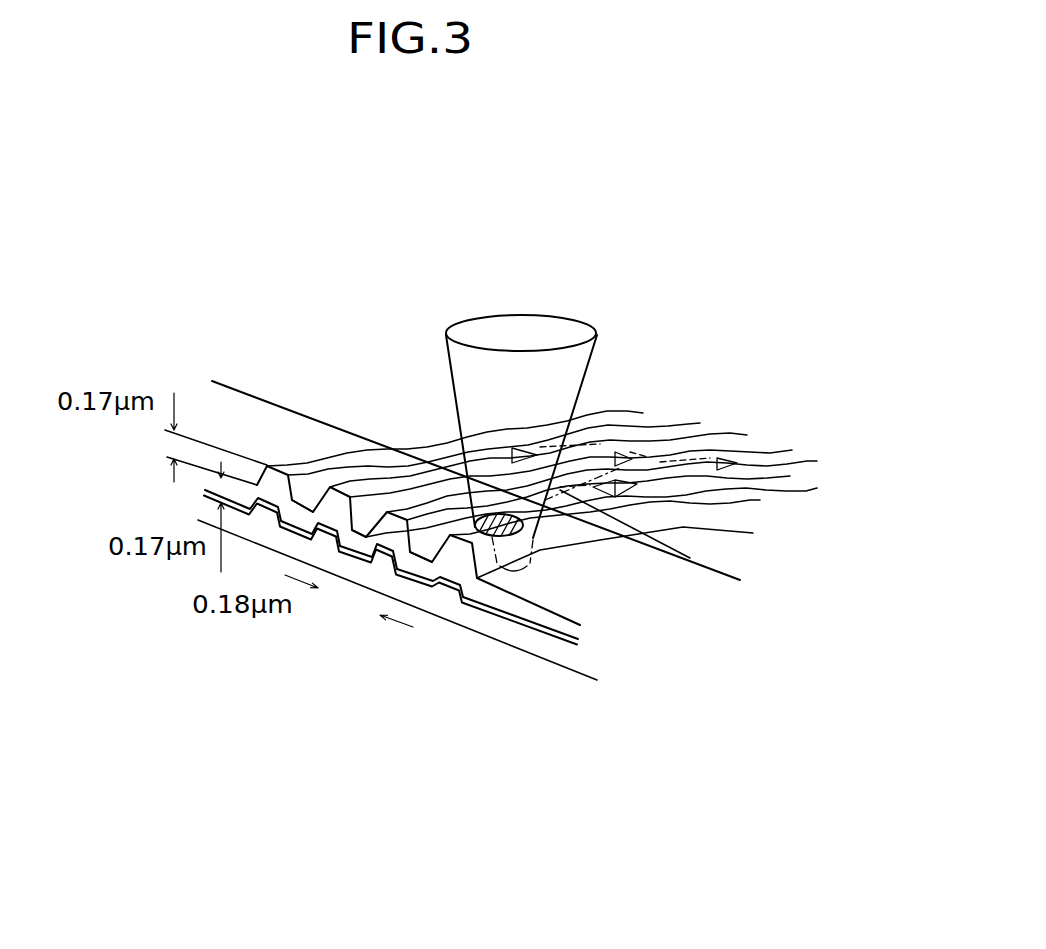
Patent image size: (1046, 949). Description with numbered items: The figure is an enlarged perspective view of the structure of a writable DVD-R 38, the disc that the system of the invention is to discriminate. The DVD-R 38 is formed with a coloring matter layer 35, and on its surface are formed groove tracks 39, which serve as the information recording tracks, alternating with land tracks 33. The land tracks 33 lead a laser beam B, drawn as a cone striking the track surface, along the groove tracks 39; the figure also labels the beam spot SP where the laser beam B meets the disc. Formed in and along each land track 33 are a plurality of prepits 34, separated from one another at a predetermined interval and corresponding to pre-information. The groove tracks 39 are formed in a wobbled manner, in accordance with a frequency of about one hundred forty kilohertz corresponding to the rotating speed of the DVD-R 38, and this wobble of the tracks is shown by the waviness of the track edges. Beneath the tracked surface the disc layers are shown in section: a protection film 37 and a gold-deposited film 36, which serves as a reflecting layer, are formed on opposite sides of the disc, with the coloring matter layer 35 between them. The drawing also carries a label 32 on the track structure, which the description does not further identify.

The wobble 32 is at (598, 418).
The land track 33 is at (348, 490).
The prepit 34 is at (647, 445).
The coloring matter layer 35 is at (573, 618).
The gold-deposited film 36 is at (523, 622).
The protection film 37 is at (226, 381).
The DVD-R 38 is at (686, 723).
The groove track 39 is at (307, 505).
The laser beam B is at (587, 370).
The beam spot SP is at (537, 540).